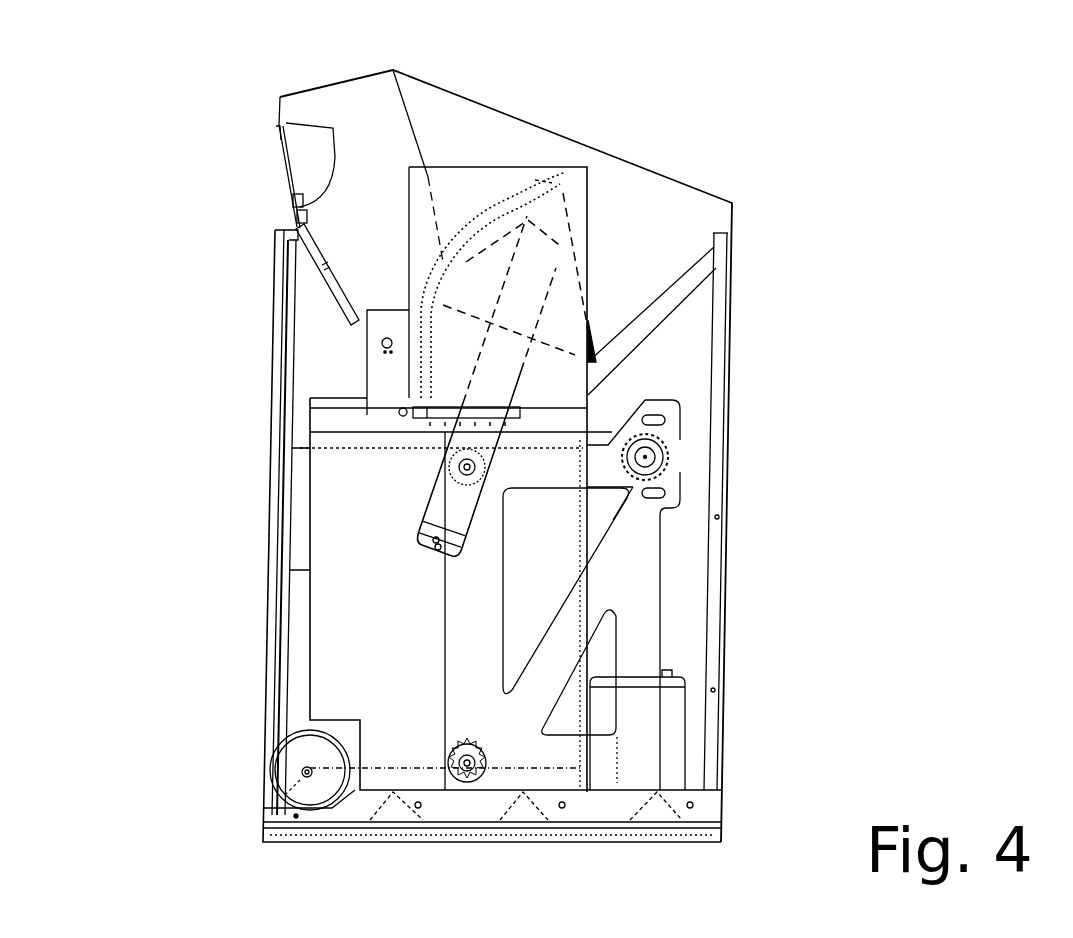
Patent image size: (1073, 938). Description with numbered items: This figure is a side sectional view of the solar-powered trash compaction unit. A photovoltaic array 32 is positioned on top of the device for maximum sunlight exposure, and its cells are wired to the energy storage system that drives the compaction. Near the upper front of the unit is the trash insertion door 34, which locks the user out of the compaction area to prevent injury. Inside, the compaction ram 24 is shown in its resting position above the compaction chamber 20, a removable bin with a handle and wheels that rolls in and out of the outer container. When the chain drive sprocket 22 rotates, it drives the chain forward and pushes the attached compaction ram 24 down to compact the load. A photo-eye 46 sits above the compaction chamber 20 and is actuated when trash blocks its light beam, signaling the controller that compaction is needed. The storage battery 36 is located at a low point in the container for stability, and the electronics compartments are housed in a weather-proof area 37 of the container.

The compaction chamber 20 is at (300, 593).
The chain drive sprocket 22 is at (673, 452).
The compaction ram 24 is at (550, 267).
The photovoltaic array 32 is at (565, 125).
The trash insertion door 34 is at (307, 160).
The storage battery 36 is at (684, 716).
The weather-proof electronics area 37 is at (694, 567).
The photo-eye 46 is at (366, 347).